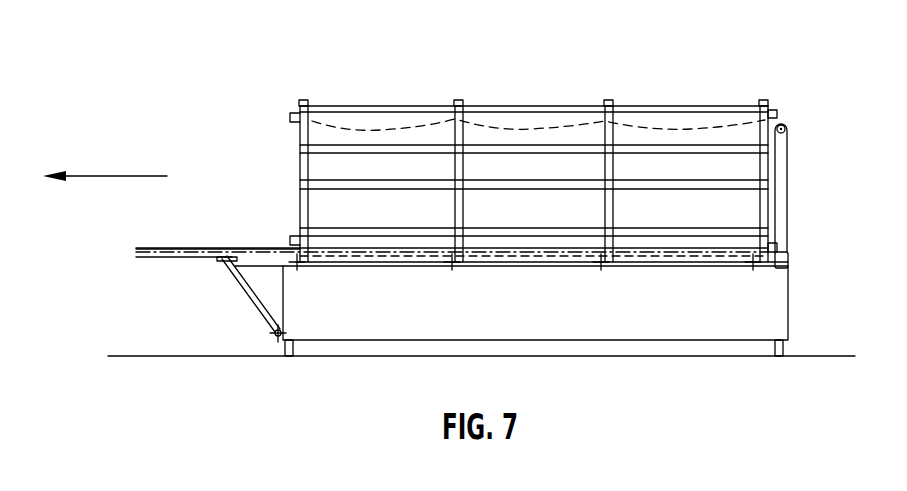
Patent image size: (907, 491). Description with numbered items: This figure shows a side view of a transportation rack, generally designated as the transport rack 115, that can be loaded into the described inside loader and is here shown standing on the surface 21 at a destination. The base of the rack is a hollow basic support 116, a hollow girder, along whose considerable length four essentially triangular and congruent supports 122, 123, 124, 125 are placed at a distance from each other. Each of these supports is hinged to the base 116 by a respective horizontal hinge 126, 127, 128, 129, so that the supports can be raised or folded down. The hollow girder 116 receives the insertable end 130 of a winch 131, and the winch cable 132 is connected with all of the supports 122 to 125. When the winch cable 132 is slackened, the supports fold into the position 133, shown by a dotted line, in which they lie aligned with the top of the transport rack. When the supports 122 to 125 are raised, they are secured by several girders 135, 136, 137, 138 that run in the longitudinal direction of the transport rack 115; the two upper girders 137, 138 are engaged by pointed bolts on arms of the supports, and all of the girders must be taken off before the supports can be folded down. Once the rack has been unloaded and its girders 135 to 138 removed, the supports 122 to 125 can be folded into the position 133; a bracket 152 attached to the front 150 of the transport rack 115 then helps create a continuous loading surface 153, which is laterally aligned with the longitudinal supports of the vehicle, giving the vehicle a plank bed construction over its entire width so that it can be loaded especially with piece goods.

The surface 21 is at (826, 356).
The transport rack 115 is at (583, 172).
The hollow basic support 116 is at (788, 310).
The support 122 is at (309, 95).
The support 123 is at (466, 94).
The support 124 is at (618, 89).
The support 125 is at (774, 90).
The horizontal hinge 126 is at (299, 263).
The horizontal hinge 127 is at (454, 263).
The horizontal hinge 128 is at (603, 263).
The horizontal hinge 129 is at (751, 263).
The insertable end 130 is at (790, 260).
The winch 131 is at (783, 193).
The cable 132 is at (695, 125).
The folded position 133 is at (223, 250).
The girder 135 is at (547, 229).
The girder 136 is at (547, 187).
The upper girder 137 is at (533, 145).
The upper girder 138 is at (505, 110).
The front of the transport rack 150 is at (281, 307).
The bracket 152 is at (222, 297).
The continuous loading surface 153 is at (171, 248).